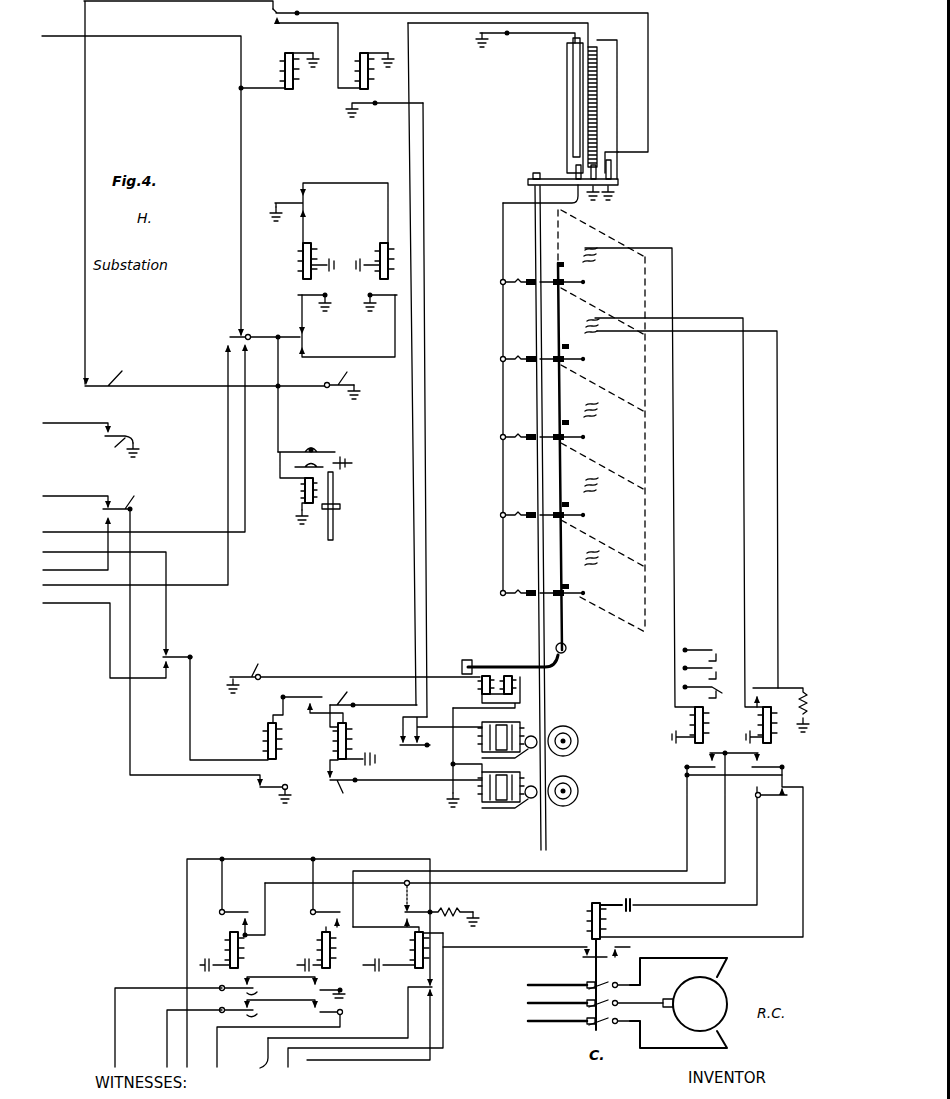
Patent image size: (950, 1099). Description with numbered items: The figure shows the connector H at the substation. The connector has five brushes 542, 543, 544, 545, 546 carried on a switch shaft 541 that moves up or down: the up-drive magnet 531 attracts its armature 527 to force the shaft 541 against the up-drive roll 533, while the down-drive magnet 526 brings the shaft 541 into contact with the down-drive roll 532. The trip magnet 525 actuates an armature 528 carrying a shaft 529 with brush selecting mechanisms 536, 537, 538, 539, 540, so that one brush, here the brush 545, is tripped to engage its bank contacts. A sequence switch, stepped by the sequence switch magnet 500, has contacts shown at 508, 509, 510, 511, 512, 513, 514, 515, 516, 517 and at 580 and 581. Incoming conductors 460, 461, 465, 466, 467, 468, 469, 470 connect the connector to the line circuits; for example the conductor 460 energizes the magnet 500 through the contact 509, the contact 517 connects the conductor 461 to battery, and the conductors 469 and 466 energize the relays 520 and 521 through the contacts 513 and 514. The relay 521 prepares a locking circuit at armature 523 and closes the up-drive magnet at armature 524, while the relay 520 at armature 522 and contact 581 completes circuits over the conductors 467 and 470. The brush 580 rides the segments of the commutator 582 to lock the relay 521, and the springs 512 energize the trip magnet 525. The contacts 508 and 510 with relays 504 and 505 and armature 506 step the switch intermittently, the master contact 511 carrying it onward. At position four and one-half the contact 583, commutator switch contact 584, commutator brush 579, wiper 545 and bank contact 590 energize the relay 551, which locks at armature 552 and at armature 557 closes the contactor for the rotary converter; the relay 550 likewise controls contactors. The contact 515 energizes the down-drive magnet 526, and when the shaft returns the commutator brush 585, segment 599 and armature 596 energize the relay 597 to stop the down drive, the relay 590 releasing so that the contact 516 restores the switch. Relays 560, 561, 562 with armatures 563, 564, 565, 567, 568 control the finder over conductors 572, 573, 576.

The conductor 460 is at (163, 176).
The conductor 461 is at (77, 419).
The conductor 465 is at (145, 438).
The conductor 466 is at (106, 595).
The conductor 467 is at (77, 543).
The conductor 468 is at (137, 465).
The conductor 469 is at (106, 640).
The conductor 470 is at (77, 493).
The sequence switch magnet 500 is at (320, 492).
The slow-acting relay 504 is at (303, 255).
The slow-releasing relay 505 is at (388, 256).
The armature 506 is at (300, 296).
The sequence switch contact 508 is at (284, 193).
The sequence switch contact 509 is at (228, 337).
The sequence switch contact 510 is at (287, 333).
The master contact 511 is at (349, 385).
The sequence switch springs 512 is at (344, 674).
The sequence switch contact 513 is at (185, 655).
The sequence switch contact 514 is at (283, 699).
The sequence switch contact 515 is at (403, 748).
The sequence switch contact 516 is at (206, 372).
The sequence switch contacts 517 is at (129, 441).
The relay 520 is at (268, 740).
The relay 521 is at (338, 745).
The armature 522 is at (272, 790).
The armature 523 is at (373, 696).
The armature 524 is at (337, 782).
The trip magnet 525 is at (512, 697).
The down-drive magnet 526 is at (512, 730).
The armature 527 is at (490, 808).
The armature 528 is at (492, 665).
The shaft 529 is at (563, 644).
The up-drive magnet 531 is at (514, 778).
The down-drive roll 532 is at (579, 740).
The up-drive roll 533 is at (579, 790).
The brush selecting mechanism 536 is at (566, 585).
The brush selecting mechanism 537 is at (566, 503).
The brush selecting mechanism 538 is at (566, 420).
The brush selecting mechanism 539 is at (566, 343).
The brush selecting mechanism 540 is at (567, 262).
The switch shaft 541 is at (537, 612).
The brush 542 is at (545, 590).
The brush 543 is at (550, 511).
The brush 544 is at (550, 433).
The brush 545 is at (550, 355).
The brush 546 is at (540, 278).
The relay 550 is at (690, 724).
The relay 551 is at (765, 724).
The armature 552 is at (770, 688).
The armature 557 is at (774, 798).
The relay 560 is at (240, 950).
The relay 561 is at (332, 948).
The relay 562 is at (430, 958).
The armature 563 is at (232, 912).
The armature 564 is at (253, 991).
The armature 565 is at (253, 1012).
The armature 567 is at (341, 988).
The armature 568 is at (342, 1010).
The conductor 572 is at (113, 1053).
The conductor 573 is at (166, 1053).
The conductor 576 is at (255, 1065).
The commutator brush 579 is at (578, 175).
The brush 580 is at (598, 205).
The sequence switch contact 581 is at (183, 637).
The commutator 582 is at (587, 135).
The sequence switch contact 583 is at (480, 33).
The commutator switch contact 584 is at (567, 114).
The commutator brush 585 is at (614, 194).
The bank contact 590 is at (285, 54).
The armature 596 is at (270, 16).
The relay 597 is at (368, 56).
The commutator segment 599 is at (618, 166).